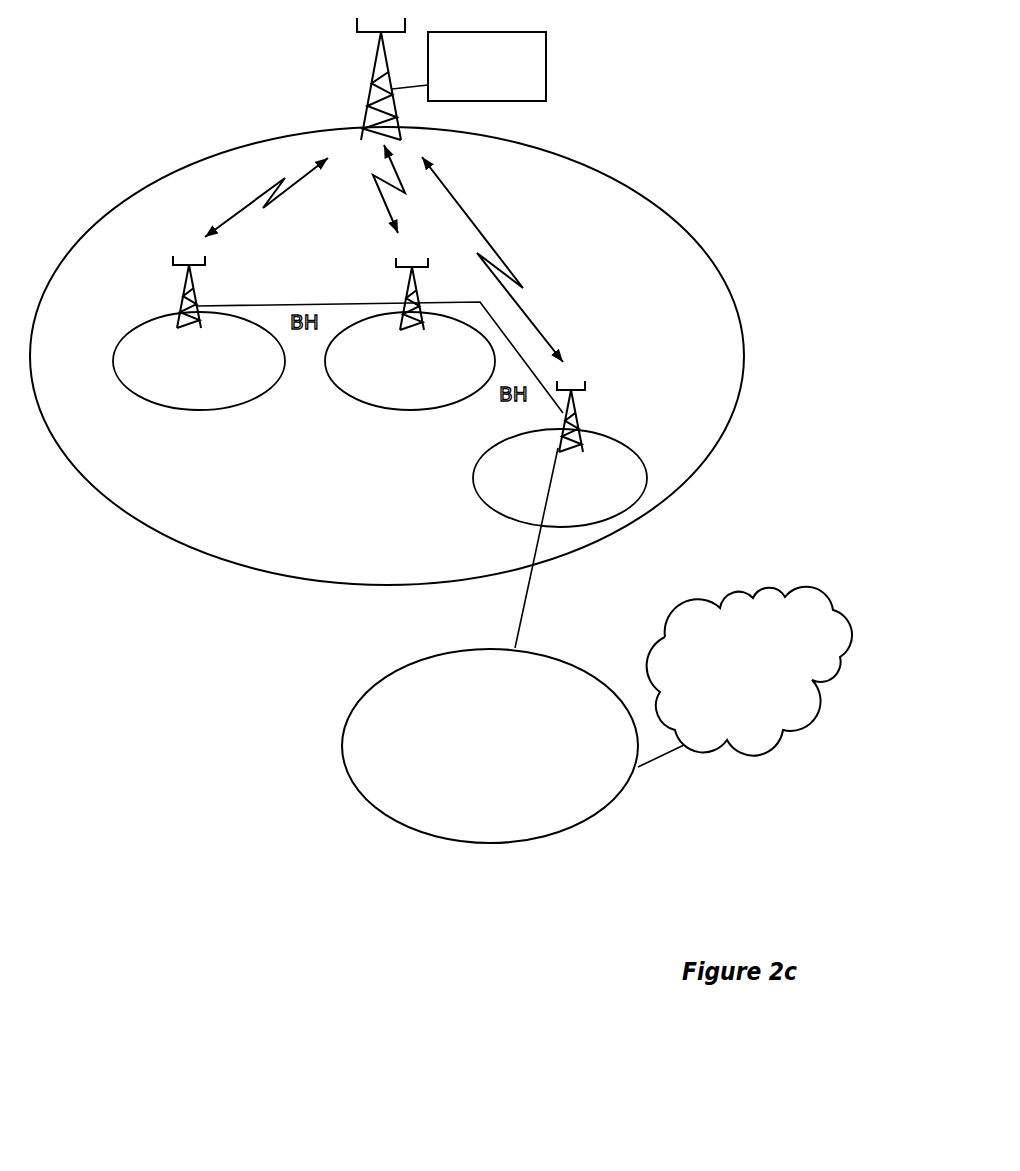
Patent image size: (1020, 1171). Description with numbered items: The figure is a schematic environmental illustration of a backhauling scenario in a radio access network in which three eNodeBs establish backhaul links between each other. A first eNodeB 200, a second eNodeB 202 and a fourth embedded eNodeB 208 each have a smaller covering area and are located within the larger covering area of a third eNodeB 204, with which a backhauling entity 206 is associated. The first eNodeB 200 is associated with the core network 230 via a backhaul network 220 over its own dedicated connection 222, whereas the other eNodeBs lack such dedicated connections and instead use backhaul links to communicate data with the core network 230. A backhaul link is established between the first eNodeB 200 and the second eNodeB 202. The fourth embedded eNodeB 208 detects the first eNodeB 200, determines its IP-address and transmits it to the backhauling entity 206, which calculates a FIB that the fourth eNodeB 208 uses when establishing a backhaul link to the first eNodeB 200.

The first eNodeB 200 is at (400, 283).
The second eNodeB 202 is at (578, 404).
The third eNodeB 204 is at (366, 100).
The backhauling entity 206 is at (547, 63).
The fourth embedded eNodeB 208 is at (182, 285).
The backhaul network 220 is at (349, 783).
The dedicated connection 222 is at (531, 589).
The core network 230 is at (721, 592).